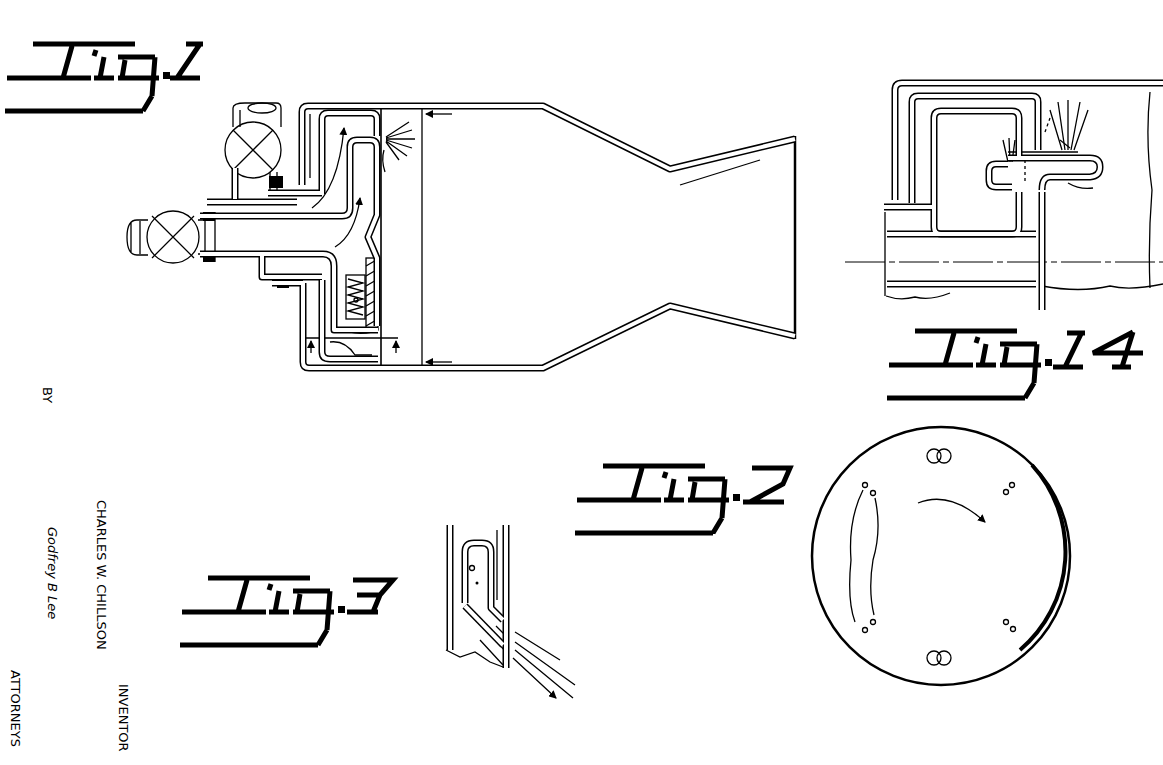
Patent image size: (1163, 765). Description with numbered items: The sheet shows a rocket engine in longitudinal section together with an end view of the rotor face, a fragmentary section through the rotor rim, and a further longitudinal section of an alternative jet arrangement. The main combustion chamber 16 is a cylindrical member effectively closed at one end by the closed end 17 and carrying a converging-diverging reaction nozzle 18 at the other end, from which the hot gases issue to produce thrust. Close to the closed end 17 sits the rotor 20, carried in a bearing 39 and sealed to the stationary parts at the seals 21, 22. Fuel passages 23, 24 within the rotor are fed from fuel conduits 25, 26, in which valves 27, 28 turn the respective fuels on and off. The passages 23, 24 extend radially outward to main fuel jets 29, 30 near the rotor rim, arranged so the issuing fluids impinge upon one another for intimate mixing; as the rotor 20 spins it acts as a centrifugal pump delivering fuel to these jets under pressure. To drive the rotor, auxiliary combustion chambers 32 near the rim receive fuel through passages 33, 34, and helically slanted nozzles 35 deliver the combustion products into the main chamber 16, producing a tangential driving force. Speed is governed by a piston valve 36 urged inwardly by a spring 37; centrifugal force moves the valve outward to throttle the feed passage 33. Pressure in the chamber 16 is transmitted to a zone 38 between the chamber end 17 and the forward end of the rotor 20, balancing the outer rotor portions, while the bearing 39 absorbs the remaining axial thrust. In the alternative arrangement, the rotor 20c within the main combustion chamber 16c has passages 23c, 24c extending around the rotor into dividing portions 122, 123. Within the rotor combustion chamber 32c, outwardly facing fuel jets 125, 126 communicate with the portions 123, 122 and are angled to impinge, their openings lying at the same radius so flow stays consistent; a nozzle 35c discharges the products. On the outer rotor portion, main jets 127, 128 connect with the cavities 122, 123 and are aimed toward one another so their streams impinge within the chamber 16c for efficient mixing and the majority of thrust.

In FIG. 1, the main combustion chamber 16 is at (523, 102).
In FIG. 1, the closed end 17 is at (291, 134).
In FIG. 1, the converging-diverging reaction nozzle 18 is at (670, 170).
In FIG. 1, the rotor 20 is at (388, 191).
In FIG. 2, the rotor 20 is at (850, 650).
In FIG. 3, the rotor 20 is at (444, 539).
In FIG. 1, the seal 21 is at (225, 271).
In FIG. 1, the seal 22 is at (273, 181).
In FIG. 1, the fuel passage 23 is at (288, 227).
In FIG. 3, the fuel passage 23 is at (458, 537).
In FIG. 1, the fuel passage 24 is at (289, 264).
In FIG. 3, the fuel passage 24 is at (493, 530).
In FIG. 1, the fuel conduit 25 is at (231, 118).
In FIG. 1, the fuel conduit 26 is at (160, 215).
In FIG. 1, the valve 27 is at (225, 152).
In FIG. 1, the valve 28 is at (165, 263).
In FIG. 1, the main fuel jet 29 is at (391, 133).
In FIG. 2, the main fuel jet 29 is at (862, 500).
In FIG. 1, the main fuel jet 30 is at (387, 152).
In FIG. 2, the main fuel jet 30 is at (876, 545).
In FIG. 1, the auxiliary combustion chamber 32 is at (355, 333).
In FIG. 2, the auxiliary combustion chamber 32 is at (938, 464).
In FIG. 3, the auxiliary combustion chamber 32 is at (477, 583).
In FIG. 1, the fuel feed passage 33 is at (357, 300).
In FIG. 3, the fuel feed passage 33 is at (469, 568).
In FIG. 1, the fuel feed passage 34 is at (322, 368).
In FIG. 1, the helically slanted nozzle 35 is at (372, 312).
In FIG. 3, the helically slanted nozzle 35 is at (500, 628).
In FIG. 1, the piston valve 36 is at (381, 262).
In FIG. 1, the spring 37 is at (372, 272).
In FIG. 1, the zone 38 is at (314, 127).
In FIG. 1, the bearing 39 is at (287, 287).
In FIG. 14, the main combustion chamber 16c is at (1075, 85).
In FIG. 14, the rotor 20c is at (1048, 244).
In FIG. 14, the passage 23c is at (918, 217).
In FIG. 14, the passage 24c is at (1004, 255).
In FIG. 14, the rotor combustion chamber 32c is at (983, 162).
In FIG. 14, the nozzle 35c is at (1067, 115).
In FIG. 14, the dividing portion 122 is at (1100, 160).
In FIG. 14, the dividing portion 123 is at (1078, 181).
In FIG. 14, the fuel jet 125 is at (987, 174).
In FIG. 14, the fuel jet 126 is at (1010, 138).
In FIG. 14, the fuel jet 127 is at (1068, 146).
In FIG. 14, the fuel jet 128 is at (1080, 150).